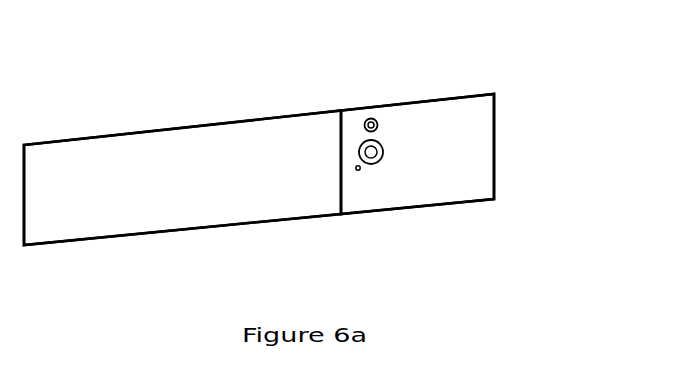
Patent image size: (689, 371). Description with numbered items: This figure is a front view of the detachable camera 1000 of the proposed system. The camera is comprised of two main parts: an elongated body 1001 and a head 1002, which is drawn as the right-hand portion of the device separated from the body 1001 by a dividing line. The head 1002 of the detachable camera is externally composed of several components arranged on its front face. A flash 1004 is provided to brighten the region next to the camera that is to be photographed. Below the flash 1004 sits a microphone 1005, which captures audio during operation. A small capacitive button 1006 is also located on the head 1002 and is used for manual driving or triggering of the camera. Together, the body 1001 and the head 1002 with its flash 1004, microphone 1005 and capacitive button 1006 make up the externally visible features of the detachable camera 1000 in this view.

The electronic device 1000 is at (255, 108).
The body 1001 is at (93, 155).
The head 1002 is at (485, 170).
The flash 1004 is at (385, 128).
The microphone 1005 is at (387, 155).
The capacitive button 1006 is at (362, 170).